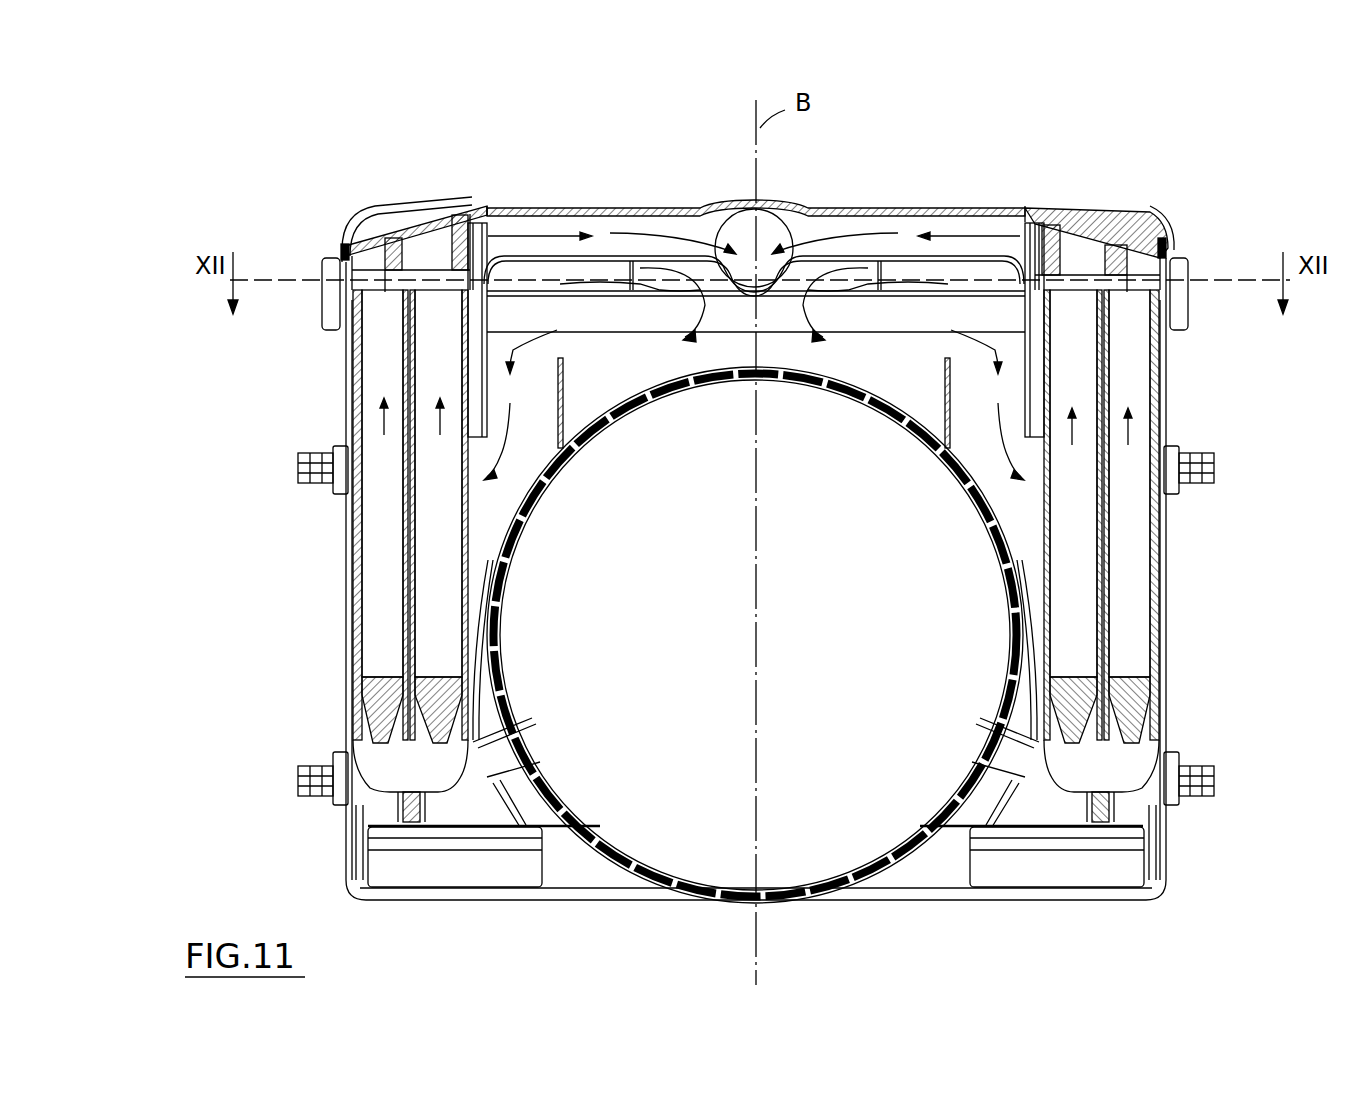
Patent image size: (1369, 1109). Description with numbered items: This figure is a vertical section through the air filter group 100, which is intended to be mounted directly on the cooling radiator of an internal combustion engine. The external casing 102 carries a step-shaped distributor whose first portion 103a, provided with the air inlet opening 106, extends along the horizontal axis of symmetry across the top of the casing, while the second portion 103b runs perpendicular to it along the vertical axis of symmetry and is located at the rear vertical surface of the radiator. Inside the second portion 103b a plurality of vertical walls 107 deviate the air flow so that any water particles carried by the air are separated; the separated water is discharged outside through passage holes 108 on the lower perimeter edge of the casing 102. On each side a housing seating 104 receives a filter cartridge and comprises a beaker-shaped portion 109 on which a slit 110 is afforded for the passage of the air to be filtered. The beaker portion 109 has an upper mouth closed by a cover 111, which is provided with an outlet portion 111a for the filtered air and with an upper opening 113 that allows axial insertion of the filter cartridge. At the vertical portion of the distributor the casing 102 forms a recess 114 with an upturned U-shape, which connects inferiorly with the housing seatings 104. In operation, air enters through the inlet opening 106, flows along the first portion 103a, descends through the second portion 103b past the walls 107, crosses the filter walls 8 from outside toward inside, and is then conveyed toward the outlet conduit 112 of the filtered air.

The air filter group 100 is at (697, 484).
The external casing 102 is at (1170, 215).
The first portion of the distributor 103a is at (600, 288).
The second portion of the distributor 103b is at (565, 332).
The housing seating 104 is at (346, 690).
The inlet opening 106 is at (553, 262).
The vertical walls 107 is at (385, 292).
The passage holes 108 is at (566, 455).
The beaker-shaped portion 109 is at (345, 592).
The slit 110 is at (468, 457).
The cover 111 is at (338, 262).
The outlet portion 111a is at (498, 205).
The outlet conduit 112 is at (790, 212).
The upper opening 113 is at (348, 245).
The recess 114 is at (503, 565).
The filter walls 8 is at (392, 542).